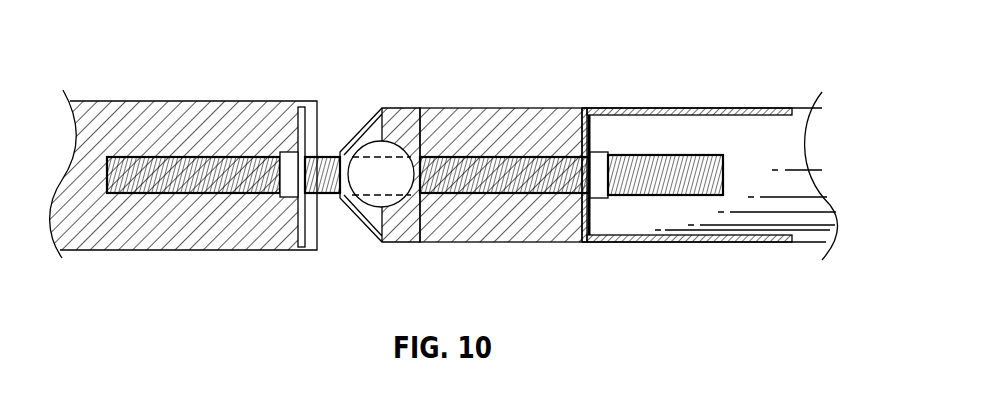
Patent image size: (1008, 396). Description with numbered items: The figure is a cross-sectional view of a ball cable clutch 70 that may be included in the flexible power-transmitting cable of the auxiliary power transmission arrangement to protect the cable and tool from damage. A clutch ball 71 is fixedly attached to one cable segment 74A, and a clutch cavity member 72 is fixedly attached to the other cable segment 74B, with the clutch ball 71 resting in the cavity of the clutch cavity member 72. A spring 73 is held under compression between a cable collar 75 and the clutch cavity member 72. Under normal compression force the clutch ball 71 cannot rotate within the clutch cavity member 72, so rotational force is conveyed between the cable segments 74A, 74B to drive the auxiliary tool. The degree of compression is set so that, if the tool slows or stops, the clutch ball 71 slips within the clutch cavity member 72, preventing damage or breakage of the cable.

The ball cable clutch 70 is at (147, 49).
The clutch ball 71 is at (375, 152).
The clutch cavity member 72 is at (393, 126).
The spring 73 is at (495, 108).
The cable segment 74A is at (658, 155).
The cable segment 74B is at (210, 193).
The cable collar 75 is at (588, 108).